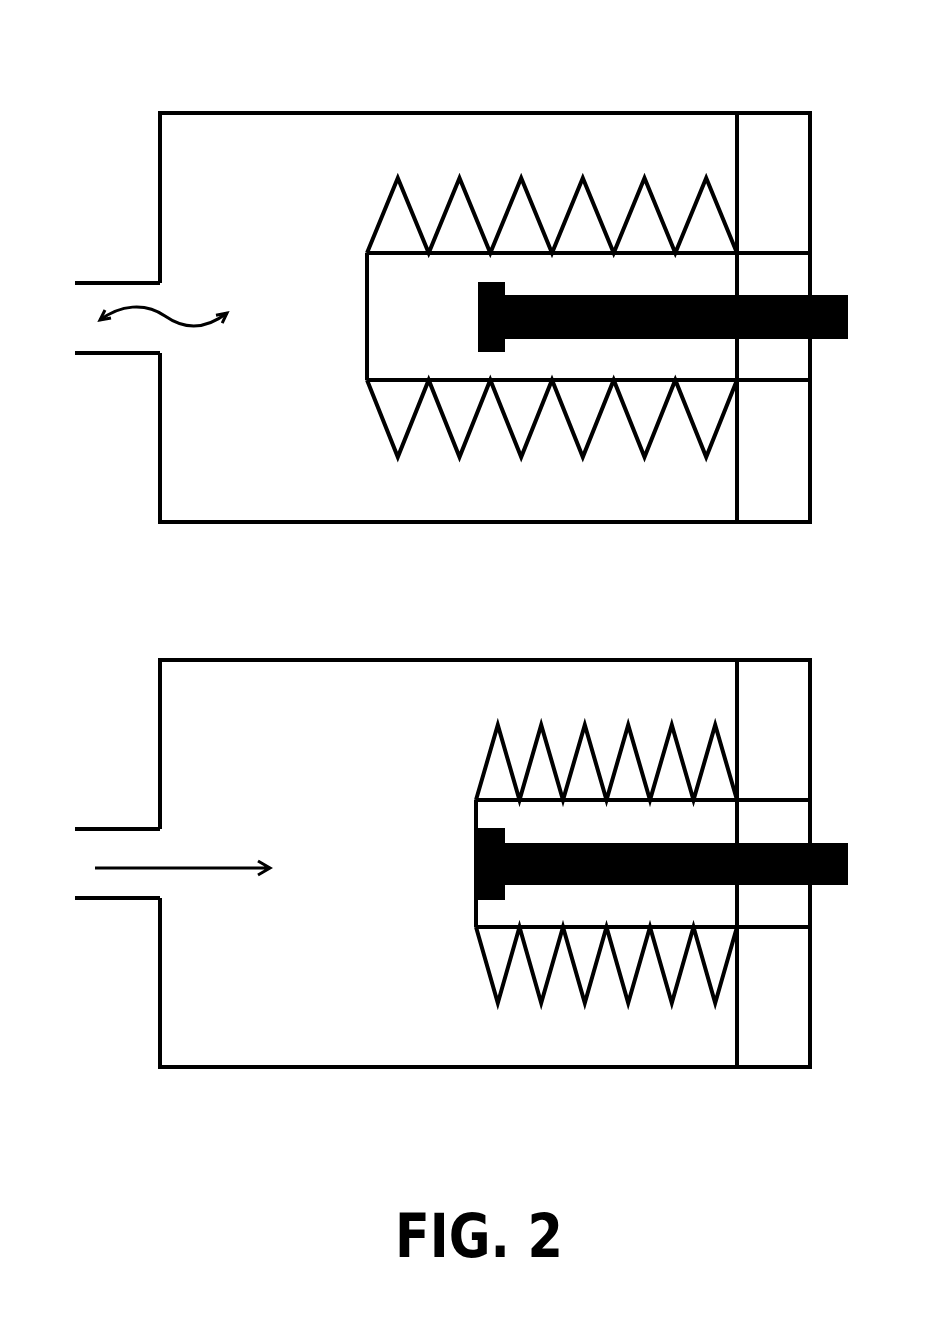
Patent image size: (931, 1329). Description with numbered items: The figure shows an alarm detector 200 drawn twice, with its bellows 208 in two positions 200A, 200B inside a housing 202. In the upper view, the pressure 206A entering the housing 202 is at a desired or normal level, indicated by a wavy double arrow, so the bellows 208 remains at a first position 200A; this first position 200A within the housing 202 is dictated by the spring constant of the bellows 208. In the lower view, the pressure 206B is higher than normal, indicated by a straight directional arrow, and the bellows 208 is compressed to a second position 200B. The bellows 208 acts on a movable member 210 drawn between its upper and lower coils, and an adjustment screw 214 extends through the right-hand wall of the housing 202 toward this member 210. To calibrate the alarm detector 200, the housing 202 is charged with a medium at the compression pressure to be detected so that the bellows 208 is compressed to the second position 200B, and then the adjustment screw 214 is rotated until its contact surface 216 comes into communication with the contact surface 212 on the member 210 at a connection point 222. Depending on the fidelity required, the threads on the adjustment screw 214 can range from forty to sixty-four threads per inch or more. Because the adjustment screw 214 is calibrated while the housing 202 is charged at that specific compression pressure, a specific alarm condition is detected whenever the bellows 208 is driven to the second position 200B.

The alarm detector 200 is at (838, 32).
The first position 200A is at (360, 538).
The second position 200B is at (360, 1083).
The housing 202 is at (160, 187).
The pressure 206A is at (152, 320).
The pressure 206B is at (123, 868).
The bellows 208 is at (346, 209).
The piston 210 is at (405, 365).
The contact surface 212 is at (365, 322).
The adjustment screw 214 is at (570, 338).
The contact surface 216 is at (466, 320).
The connection point 222 is at (463, 885).